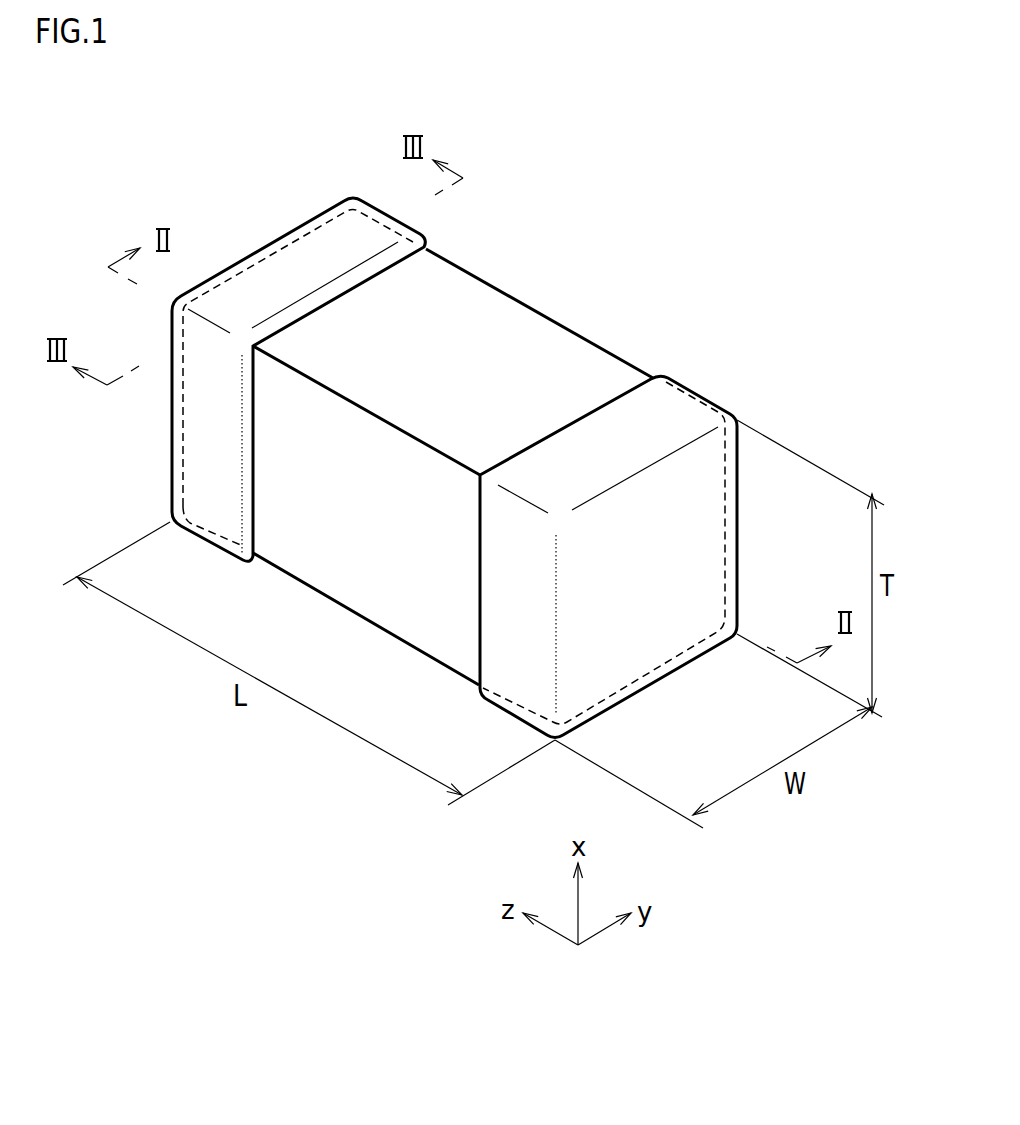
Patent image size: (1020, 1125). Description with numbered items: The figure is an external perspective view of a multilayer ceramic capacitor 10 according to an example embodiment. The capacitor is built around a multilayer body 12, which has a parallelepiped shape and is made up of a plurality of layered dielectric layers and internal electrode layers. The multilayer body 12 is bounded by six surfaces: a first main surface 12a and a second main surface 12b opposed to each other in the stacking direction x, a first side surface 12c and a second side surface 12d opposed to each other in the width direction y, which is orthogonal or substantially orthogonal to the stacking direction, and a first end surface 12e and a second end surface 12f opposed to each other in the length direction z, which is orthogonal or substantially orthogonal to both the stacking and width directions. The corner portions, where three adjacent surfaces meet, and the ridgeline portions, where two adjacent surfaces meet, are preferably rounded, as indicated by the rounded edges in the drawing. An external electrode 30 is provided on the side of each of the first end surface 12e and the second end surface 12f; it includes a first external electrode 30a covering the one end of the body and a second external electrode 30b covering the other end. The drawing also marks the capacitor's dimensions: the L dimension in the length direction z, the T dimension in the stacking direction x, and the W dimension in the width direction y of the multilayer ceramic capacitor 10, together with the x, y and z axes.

The multilayer ceramic capacitor 10 is at (489, 522).
The multilayer body 12 is at (439, 362).
The first main surface 12a is at (539, 383).
The second main surface 12b is at (357, 619).
The first side surface 12c is at (295, 490).
The second side surface 12d is at (539, 298).
The first end surface 12e is at (297, 256).
The second end surface 12f is at (681, 570).
The external electrode 30 is at (465, 528).
The first external electrode 30a is at (298, 327).
The second external electrode 30b is at (619, 521).